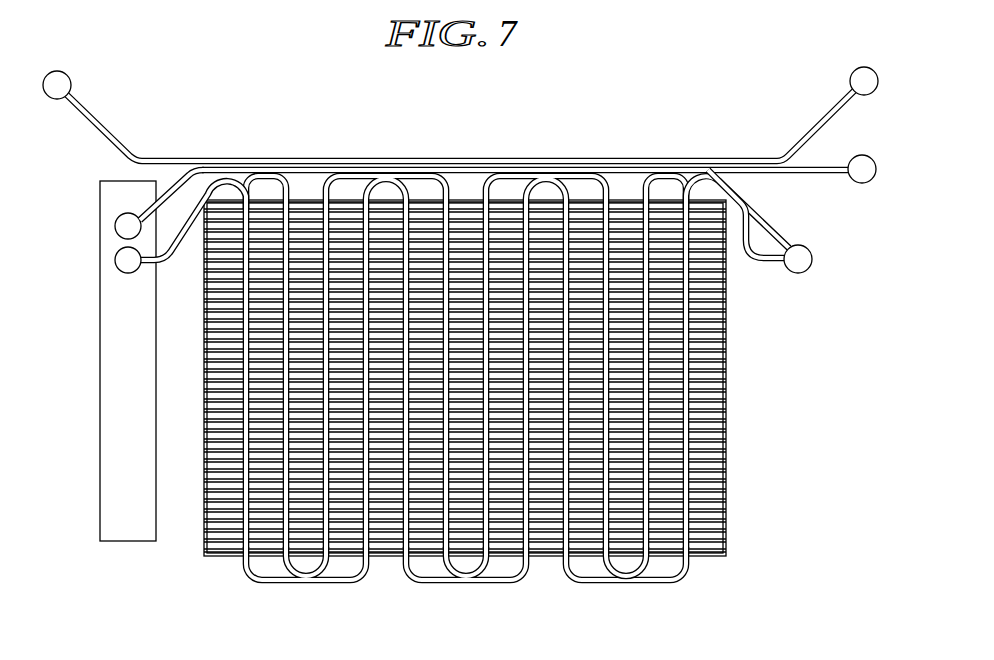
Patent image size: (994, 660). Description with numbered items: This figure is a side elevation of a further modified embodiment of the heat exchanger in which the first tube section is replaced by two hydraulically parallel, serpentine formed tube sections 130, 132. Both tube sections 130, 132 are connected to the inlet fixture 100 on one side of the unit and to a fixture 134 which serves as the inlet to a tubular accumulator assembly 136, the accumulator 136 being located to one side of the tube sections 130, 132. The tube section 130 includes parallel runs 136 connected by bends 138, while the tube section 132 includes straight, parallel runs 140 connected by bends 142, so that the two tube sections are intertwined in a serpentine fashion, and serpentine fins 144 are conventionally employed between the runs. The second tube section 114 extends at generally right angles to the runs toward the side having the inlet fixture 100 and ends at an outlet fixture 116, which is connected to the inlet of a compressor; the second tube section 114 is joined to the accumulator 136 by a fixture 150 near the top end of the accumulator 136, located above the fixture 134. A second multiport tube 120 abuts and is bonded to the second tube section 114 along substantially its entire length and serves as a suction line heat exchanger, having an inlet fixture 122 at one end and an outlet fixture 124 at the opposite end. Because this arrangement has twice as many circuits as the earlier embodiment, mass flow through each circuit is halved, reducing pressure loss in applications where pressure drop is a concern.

The inlet fixture 100 is at (799, 264).
The second section of the tube 114 is at (138, 196).
The outlet fixture 116 is at (848, 176).
The second multiport tube 120 is at (100, 117).
The inlet fixture 122 is at (842, 73).
The outlet fixture 124 is at (58, 66).
The serpentine tube section 130 is at (647, 575).
The serpentine tube section 132 is at (590, 552).
The fixture 134 is at (107, 258).
The tubular accumulator assembly 136 is at (102, 460).
The bends 138 is at (673, 568).
The straight parallel runs 140 is at (600, 422).
The bends 142 is at (640, 565).
The serpentine fins 144 is at (383, 548).
The fixture 150 is at (107, 207).